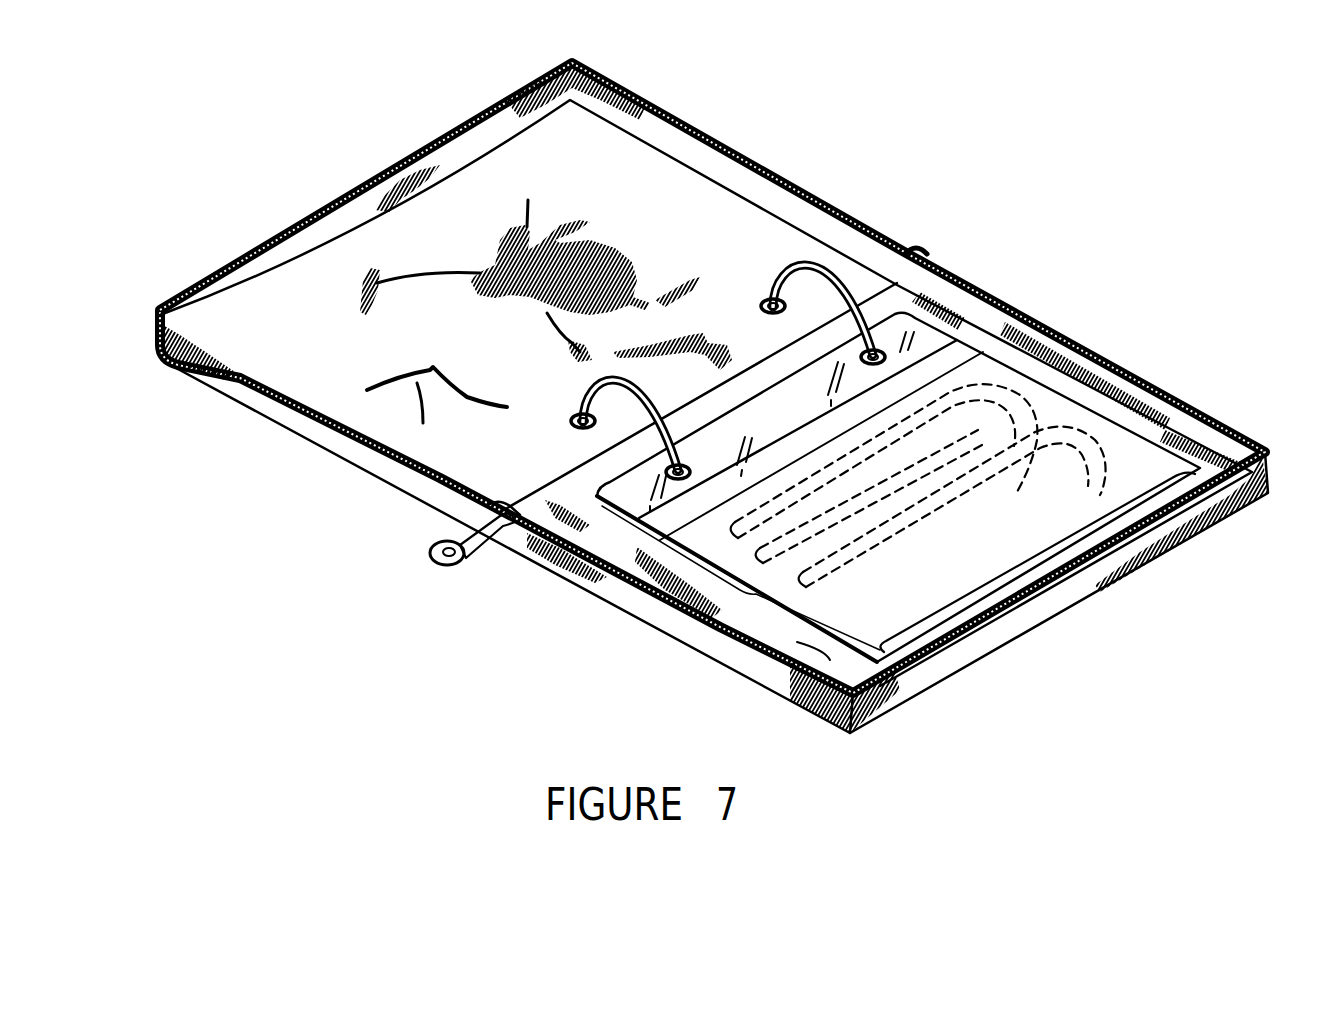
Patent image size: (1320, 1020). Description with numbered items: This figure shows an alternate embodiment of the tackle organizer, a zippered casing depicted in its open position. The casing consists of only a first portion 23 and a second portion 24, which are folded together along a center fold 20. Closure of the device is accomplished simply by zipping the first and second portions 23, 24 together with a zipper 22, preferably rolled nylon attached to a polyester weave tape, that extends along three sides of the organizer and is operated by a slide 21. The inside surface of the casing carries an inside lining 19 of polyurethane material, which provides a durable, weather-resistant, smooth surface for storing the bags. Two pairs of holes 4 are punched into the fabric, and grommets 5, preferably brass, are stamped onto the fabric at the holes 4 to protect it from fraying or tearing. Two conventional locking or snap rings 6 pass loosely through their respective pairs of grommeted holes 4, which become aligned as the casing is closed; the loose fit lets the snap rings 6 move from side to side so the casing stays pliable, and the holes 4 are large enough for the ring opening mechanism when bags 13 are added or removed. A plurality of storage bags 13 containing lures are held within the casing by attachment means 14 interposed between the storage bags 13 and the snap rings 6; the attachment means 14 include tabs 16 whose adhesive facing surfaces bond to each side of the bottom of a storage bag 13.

The holes 4 is at (757, 303).
The grommets 5 is at (823, 314).
The snap rings 6 is at (803, 268).
The storage bags 13 is at (1117, 430).
The attachment means 14 is at (930, 337).
The tabs 16 is at (960, 352).
The inside lining 19 is at (327, 303).
The center fold 20 is at (893, 280).
The slide 21 is at (453, 542).
The zipper 22 is at (163, 357).
The first portion 23 is at (330, 356).
The second portion 24 is at (797, 642).